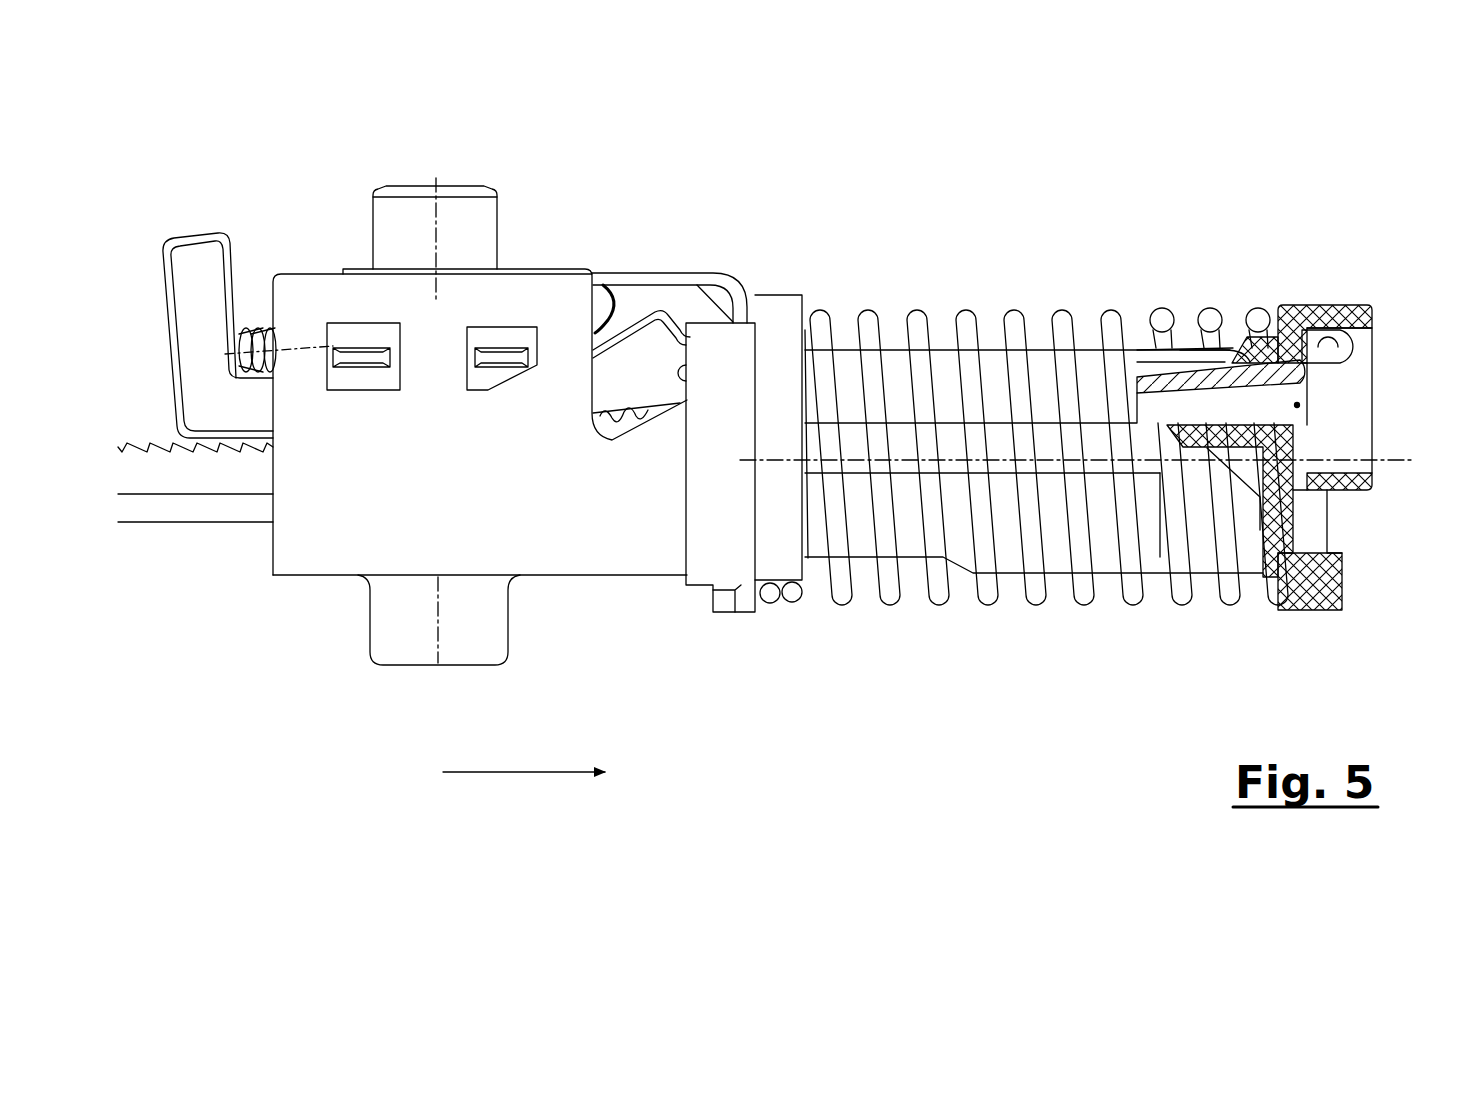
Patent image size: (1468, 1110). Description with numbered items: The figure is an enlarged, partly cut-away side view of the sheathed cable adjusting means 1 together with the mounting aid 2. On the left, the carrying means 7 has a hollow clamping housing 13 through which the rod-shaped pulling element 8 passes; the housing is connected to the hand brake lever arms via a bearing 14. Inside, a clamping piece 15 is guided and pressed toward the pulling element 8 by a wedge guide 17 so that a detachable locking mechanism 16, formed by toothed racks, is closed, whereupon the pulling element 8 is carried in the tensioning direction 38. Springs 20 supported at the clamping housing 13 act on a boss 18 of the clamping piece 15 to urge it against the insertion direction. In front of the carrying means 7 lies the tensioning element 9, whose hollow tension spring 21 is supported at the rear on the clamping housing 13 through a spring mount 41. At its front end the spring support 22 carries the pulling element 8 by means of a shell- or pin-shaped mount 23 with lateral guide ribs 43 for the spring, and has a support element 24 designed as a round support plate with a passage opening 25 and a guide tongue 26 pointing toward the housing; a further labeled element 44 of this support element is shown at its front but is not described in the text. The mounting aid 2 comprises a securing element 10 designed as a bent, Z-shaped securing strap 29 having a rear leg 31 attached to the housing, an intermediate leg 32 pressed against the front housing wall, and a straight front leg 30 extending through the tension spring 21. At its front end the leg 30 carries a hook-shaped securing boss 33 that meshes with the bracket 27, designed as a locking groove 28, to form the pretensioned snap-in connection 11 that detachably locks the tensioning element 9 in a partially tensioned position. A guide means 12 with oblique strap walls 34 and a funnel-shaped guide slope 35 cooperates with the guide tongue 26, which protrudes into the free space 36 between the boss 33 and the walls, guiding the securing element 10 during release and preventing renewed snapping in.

The sheathed cable adjusting means 1 is at (261, 597).
The mounting aid 2 is at (967, 619).
The carrying means 7 is at (357, 603).
The pulling element 8 is at (178, 508).
The tensioning element 9 is at (833, 611).
The securing element 10 is at (1094, 434).
The snap-in connection 11 is at (1355, 337).
The guide means 12 is at (1140, 332).
The clamping housing 13 is at (508, 301).
The bearing 14 is at (390, 217).
The clamping piece 15 is at (653, 352).
The locking mechanism 16 is at (155, 452).
The wedge guide 17 is at (627, 320).
The boss 18 is at (190, 263).
The spring 20 is at (246, 327).
The tension spring 21 is at (1015, 323).
The spring support 22 is at (1298, 452).
The mount 23 is at (1024, 511).
The support element 24 is at (1315, 603).
The passage opening 25 is at (1298, 406).
The guide tongue 26 is at (1262, 338).
The bracket 27 is at (1312, 328).
The locking groove 28 is at (1290, 337).
The securing strap 29 is at (895, 382).
The front leg 30 is at (1307, 377).
The rear leg 31 is at (613, 277).
The intermediate leg 32 is at (738, 312).
The securing boss 33 is at (1343, 362).
The strap walls 34 is at (1165, 348).
The guide slope 35 is at (1190, 344).
The free space 36 is at (1283, 483).
The tensioning direction 38 is at (512, 773).
The spring mount 41 is at (712, 558).
The guide ribs 43 is at (1158, 565).
The sealing bead 44 is at (1350, 328).